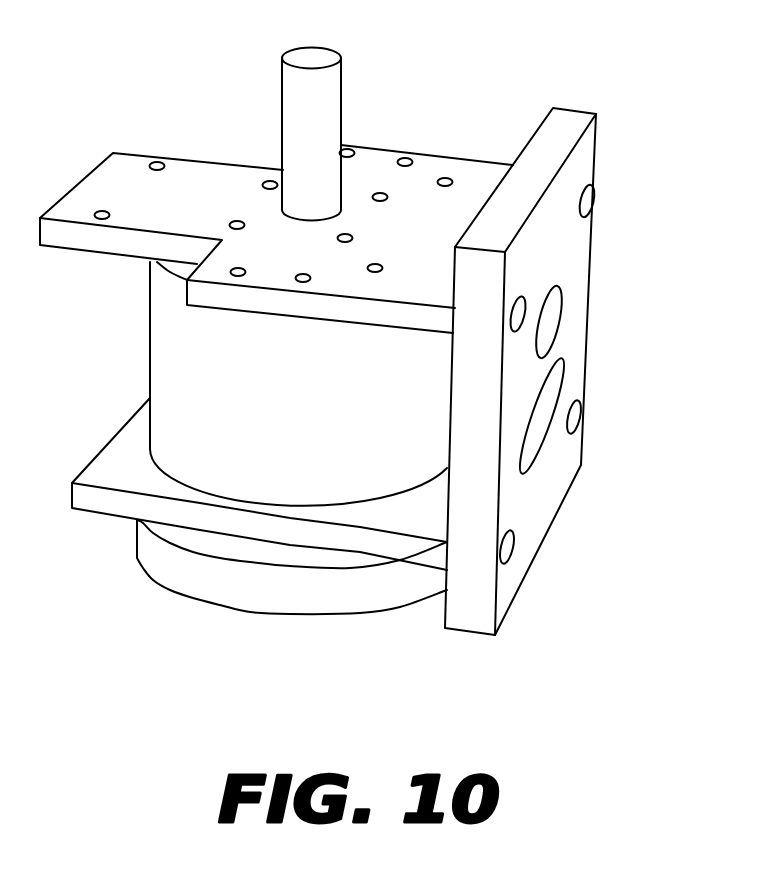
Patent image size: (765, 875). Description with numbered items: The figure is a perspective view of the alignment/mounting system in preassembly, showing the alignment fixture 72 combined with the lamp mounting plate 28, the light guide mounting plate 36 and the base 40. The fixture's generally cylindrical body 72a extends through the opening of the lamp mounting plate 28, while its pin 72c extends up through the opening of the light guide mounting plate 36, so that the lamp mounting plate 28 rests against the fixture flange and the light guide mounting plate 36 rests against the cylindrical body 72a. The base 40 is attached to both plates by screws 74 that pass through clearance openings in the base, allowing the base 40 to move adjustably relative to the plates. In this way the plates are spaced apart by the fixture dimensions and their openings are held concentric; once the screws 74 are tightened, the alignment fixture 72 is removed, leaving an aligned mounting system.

The lamp mounting plate 28 is at (110, 505).
The light guide mounting plate 36 is at (185, 177).
The base mounting plate 40 is at (583, 148).
The alignment fixture 72 is at (322, 457).
The cylindrical body 72a is at (233, 433).
The pin 72c is at (330, 100).
The screws 74 is at (507, 547).